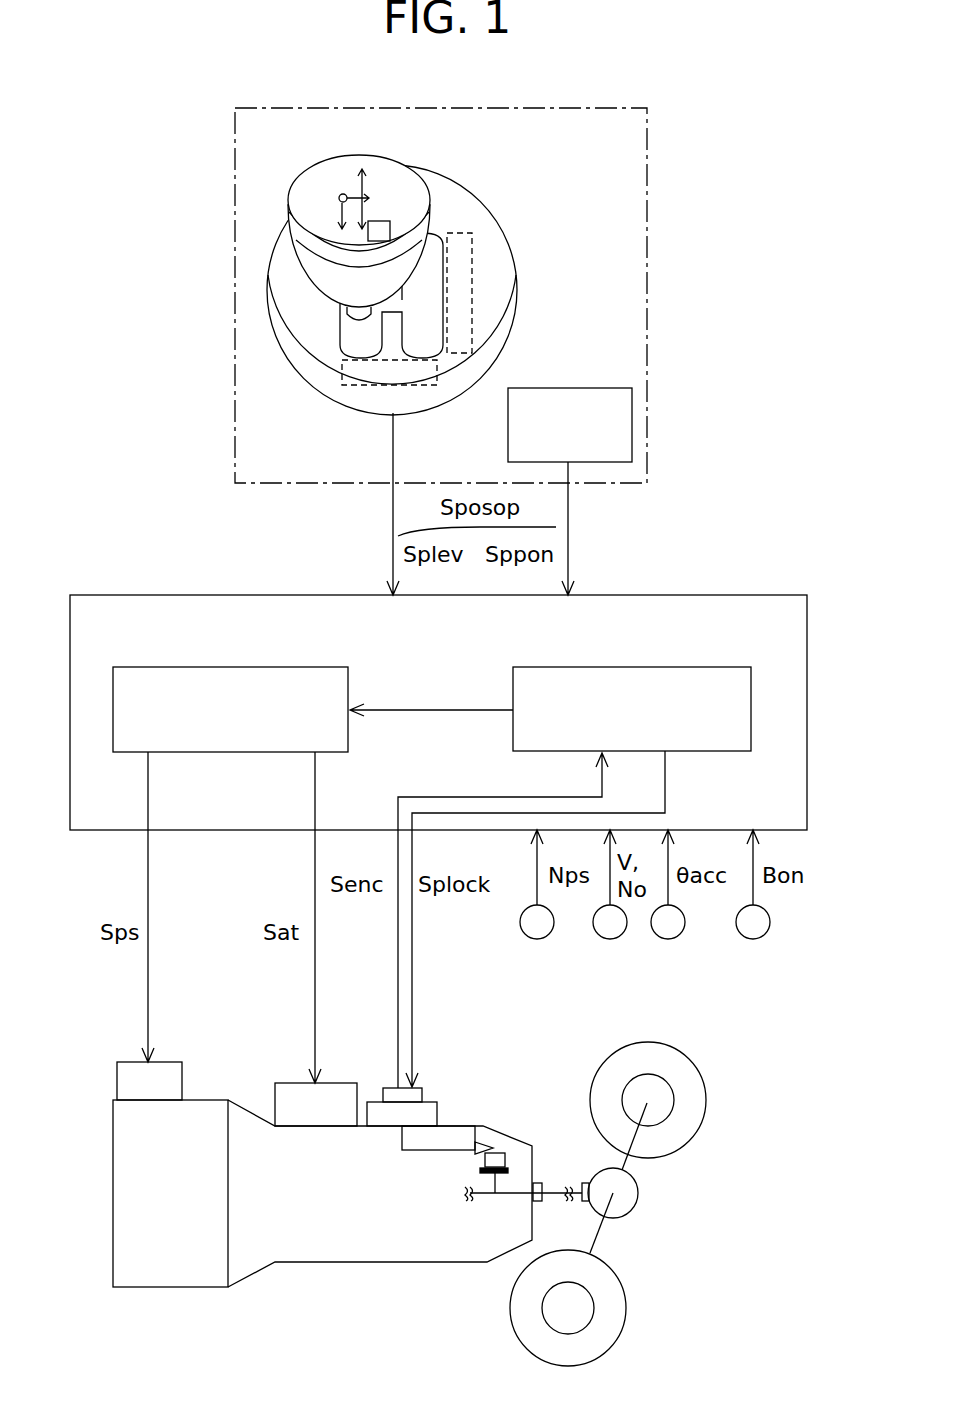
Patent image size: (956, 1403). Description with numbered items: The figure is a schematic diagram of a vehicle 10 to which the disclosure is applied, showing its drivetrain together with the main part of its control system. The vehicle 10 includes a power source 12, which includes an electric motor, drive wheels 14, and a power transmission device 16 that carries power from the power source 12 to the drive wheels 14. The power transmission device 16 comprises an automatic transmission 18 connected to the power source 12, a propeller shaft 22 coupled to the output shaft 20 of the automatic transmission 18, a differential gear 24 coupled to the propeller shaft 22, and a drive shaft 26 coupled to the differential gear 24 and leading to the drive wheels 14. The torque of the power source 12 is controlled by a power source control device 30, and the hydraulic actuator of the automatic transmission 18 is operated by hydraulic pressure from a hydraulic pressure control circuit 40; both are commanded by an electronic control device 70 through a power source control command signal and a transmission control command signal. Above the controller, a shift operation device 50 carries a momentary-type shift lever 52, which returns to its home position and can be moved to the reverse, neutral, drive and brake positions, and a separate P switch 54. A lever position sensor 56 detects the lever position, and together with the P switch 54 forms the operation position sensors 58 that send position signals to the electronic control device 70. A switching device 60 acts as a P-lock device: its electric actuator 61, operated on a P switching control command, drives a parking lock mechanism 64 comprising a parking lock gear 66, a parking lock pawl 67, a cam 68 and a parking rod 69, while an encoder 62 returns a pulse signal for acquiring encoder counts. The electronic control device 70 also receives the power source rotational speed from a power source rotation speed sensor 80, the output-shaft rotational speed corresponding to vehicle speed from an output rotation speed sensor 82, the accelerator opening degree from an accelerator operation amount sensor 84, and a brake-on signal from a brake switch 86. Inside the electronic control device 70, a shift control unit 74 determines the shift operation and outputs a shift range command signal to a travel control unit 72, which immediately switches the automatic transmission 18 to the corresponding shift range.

The vehicle 10 is at (700, 98).
The power source 12 is at (150, 1275).
The drive wheels 14 is at (672, 1070).
The power transmission device 16 is at (272, 1312).
The automatic transmission 18 is at (310, 1245).
The output shaft 20 is at (505, 1195).
The propeller shaft 22 is at (556, 1186).
The differential gear 24 is at (627, 1200).
The drive shaft 26 is at (630, 1162).
The power source control device 30 is at (167, 1075).
The hydraulic pressure control circuit 40 is at (293, 1094).
The shift operation device 50 is at (397, 108).
The shift lever 52 is at (341, 196).
The P switch 54 is at (575, 400).
The lever position sensor 56 is at (437, 372).
The operation position sensors 58 is at (609, 293).
The switching device 60 is at (368, 1071).
The electric actuator 61 is at (428, 1110).
The encoder 62 is at (420, 1088).
The parking lock mechanism 64 is at (526, 1137).
The parking lock gear 66 is at (480, 1163).
The parking lock pawl 67 is at (500, 1152).
The cam 68 is at (483, 1143).
The parking rod 69 is at (422, 1152).
The electronic control device 70 is at (745, 607).
The travel control unit 72 is at (287, 677).
The shift control unit 74 is at (685, 678).
The power source rotation speed sensor 80 is at (538, 939).
The output rotation speed sensor 82 is at (611, 939).
The accelerator operation amount sensor 84 is at (669, 939).
The brake switch 86 is at (754, 939).